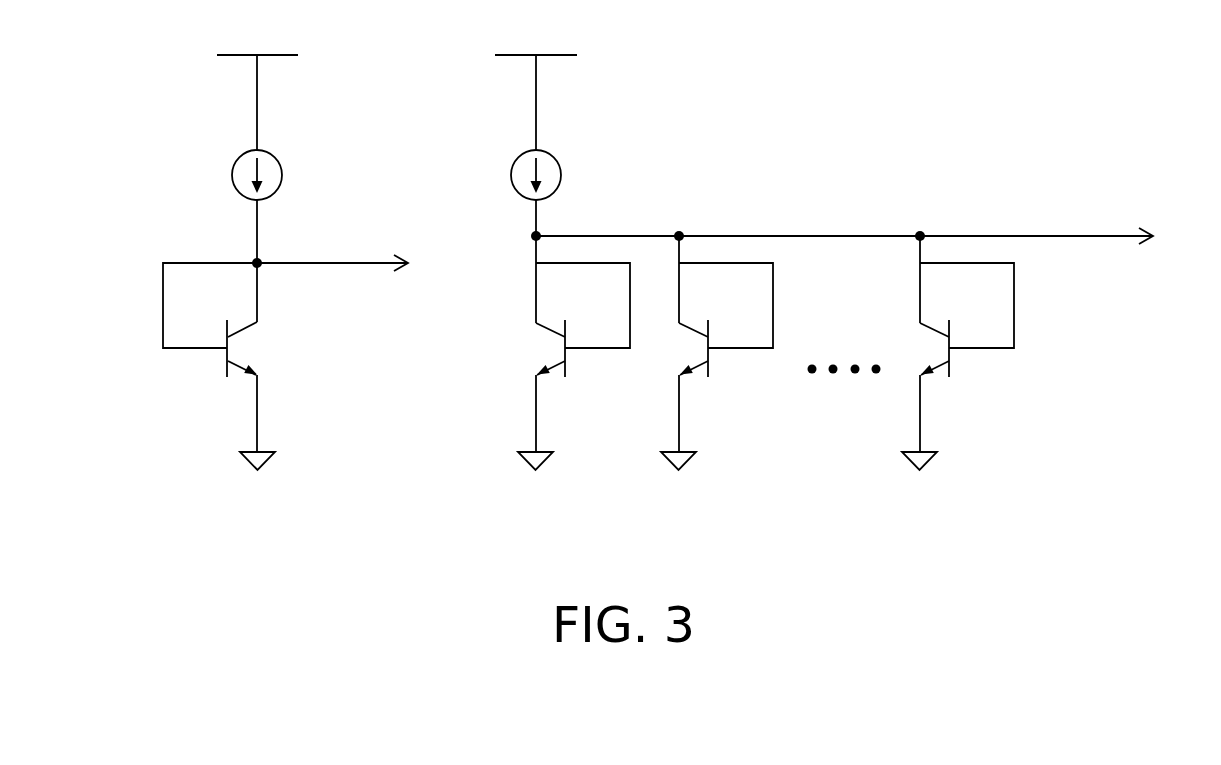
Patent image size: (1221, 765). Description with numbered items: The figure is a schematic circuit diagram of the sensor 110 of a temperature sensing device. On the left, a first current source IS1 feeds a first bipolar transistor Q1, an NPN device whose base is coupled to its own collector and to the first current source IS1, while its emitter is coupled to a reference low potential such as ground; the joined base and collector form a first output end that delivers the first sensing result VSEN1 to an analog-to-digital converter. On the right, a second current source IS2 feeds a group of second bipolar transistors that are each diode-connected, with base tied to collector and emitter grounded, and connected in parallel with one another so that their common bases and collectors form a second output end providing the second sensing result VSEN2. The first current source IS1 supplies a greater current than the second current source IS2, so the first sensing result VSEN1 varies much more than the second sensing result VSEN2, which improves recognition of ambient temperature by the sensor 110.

The sensor 110 is at (1073, 537).
The first current source IS1 is at (240, 157).
The second current source IS2 is at (553, 157).
The first bipolar transistor Q1 is at (219, 366).
The first sensing result VSEN1 is at (339, 242).
The second sensing result VSEN2 is at (854, 216).